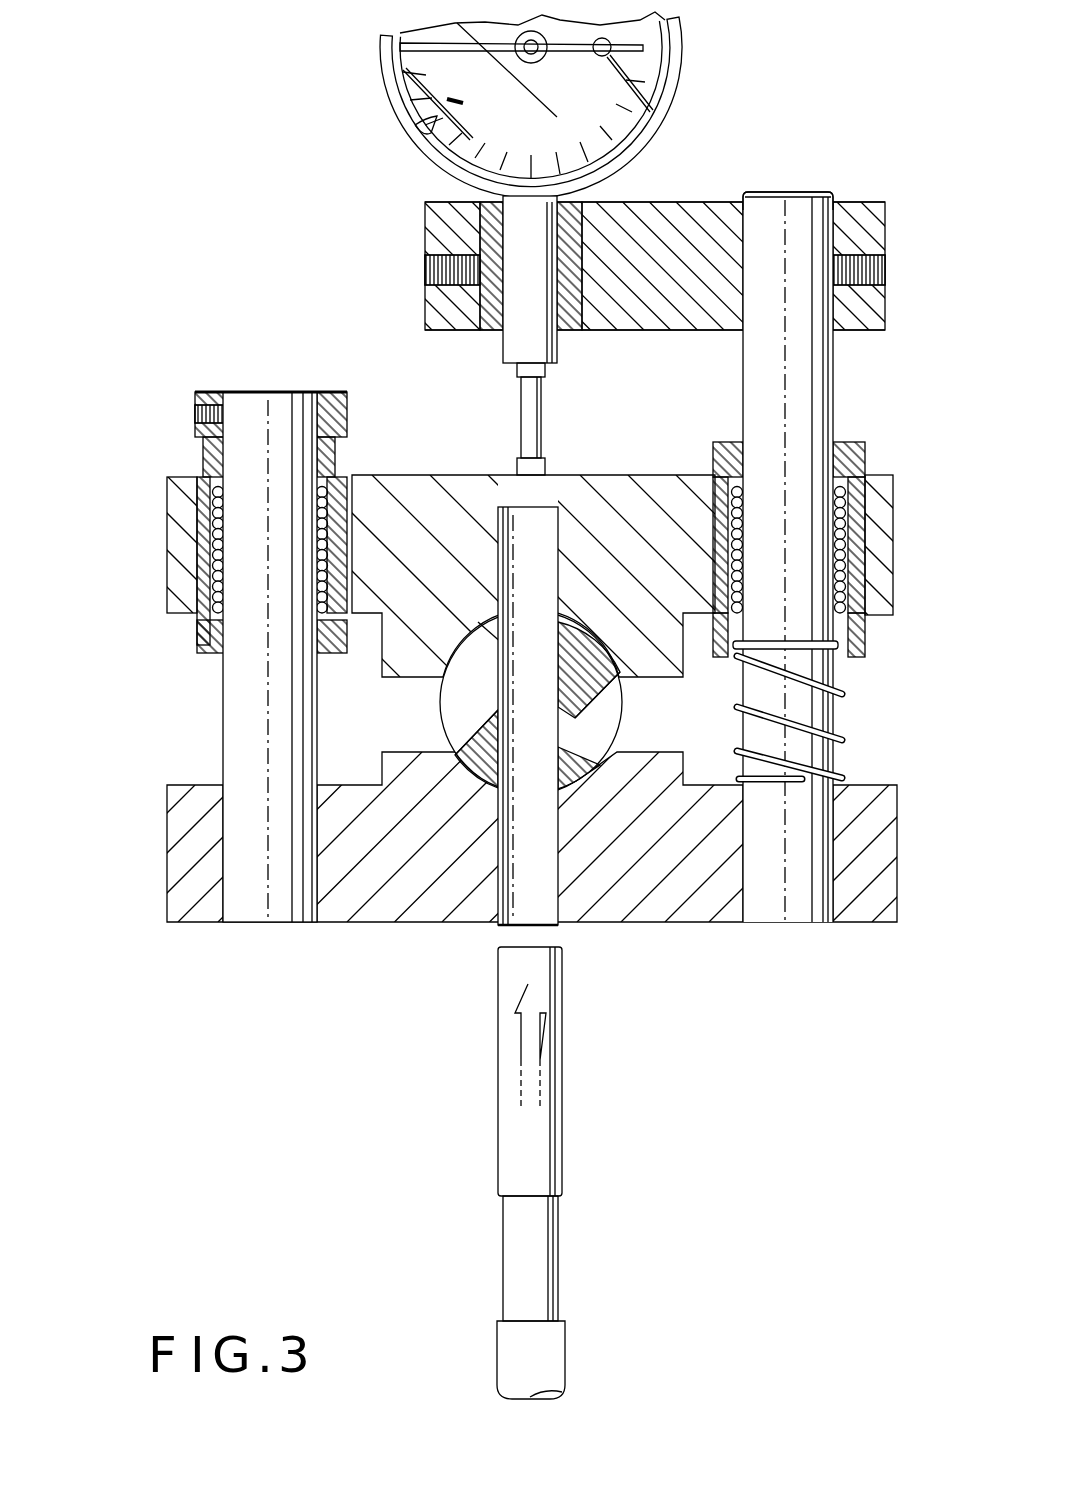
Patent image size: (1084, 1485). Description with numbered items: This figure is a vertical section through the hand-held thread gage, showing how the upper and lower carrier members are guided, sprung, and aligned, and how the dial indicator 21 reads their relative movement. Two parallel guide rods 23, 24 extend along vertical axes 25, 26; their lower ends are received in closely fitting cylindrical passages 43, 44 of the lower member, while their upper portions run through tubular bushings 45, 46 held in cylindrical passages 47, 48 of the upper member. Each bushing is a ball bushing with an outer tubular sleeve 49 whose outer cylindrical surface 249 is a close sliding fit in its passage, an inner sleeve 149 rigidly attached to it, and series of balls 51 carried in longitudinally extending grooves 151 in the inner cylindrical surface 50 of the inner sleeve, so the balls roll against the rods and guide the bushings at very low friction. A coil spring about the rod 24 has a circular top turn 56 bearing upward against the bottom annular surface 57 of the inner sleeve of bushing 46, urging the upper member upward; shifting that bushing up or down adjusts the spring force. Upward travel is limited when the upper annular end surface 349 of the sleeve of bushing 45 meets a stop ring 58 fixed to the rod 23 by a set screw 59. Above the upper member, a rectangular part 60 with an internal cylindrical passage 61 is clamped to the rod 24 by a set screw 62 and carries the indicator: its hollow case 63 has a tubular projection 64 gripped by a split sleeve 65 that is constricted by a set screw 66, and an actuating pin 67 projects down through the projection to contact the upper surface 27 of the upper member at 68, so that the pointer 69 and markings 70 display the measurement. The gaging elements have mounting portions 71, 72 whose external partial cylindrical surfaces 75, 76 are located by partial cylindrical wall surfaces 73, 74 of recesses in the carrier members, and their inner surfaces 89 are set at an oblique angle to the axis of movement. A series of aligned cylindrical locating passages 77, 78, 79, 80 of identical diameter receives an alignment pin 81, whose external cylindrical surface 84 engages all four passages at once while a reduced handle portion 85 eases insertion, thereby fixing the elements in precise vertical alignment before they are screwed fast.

The dial indicator 21 is at (374, 93).
The guide rod 23 is at (225, 680).
The guide rod 24 is at (743, 362).
The axis of guide rod 25 is at (266, 740).
The axis of guide rod 26 is at (786, 420).
The upper surface of member 11 27 is at (642, 475).
The cylindrical vertical passage 43 is at (232, 888).
The cylindrical vertical passage 44 is at (822, 890).
The tubular bushing 45 is at (200, 630).
The tubular bushing 46 is at (868, 645).
The cylindrical vertical passage 47 is at (178, 518).
The cylindrical vertical passage 48 is at (862, 570).
The outer tubular sleeve 49 is at (200, 490).
The inner cylindrical surface 50 is at (228, 460).
The balls 51 is at (318, 502).
The circular top turn of spring 56 is at (812, 652).
The bottom annular surface of inner sleeve 57 is at (738, 660).
The stop ring 58 is at (347, 396).
The set screw 59 is at (203, 410).
The part 60 is at (665, 212).
The internal cylindrical passage 61 is at (765, 200).
The set screw 62 is at (885, 268).
The hollow case 63 is at (681, 88).
The tubular projection 64 is at (505, 342).
The sleeve 65 is at (572, 318).
The set screw 66 is at (425, 268).
The actuating pin 67 is at (541, 442).
The contact point 68 is at (518, 466).
The pointer 69 is at (458, 64).
The markings 70 is at (434, 126).
The mounting portion 71 is at (605, 680).
The mounting portion 72 is at (468, 740).
The partial cylindrical wall surface 73 is at (582, 622).
The partial cylindrical wall surface 74 is at (470, 762).
The external partial cylindrical surface 75 is at (480, 615).
The external partial cylindrical surface 76 is at (562, 795).
The locating passage 77 is at (548, 925).
The locating passage 78 is at (560, 762).
The locating passage 79 is at (503, 652).
The locating passage 80 is at (506, 540).
The alignment pin 81 is at (497, 1108).
The external cylindrical surface 84 is at (562, 1102).
The handle portion 85 is at (553, 1212).
The inner surfaces of gaging elements 89 is at (548, 722).
The inner sleeve 149 is at (210, 465).
The longitudinally extending grooves 151 is at (322, 582).
The outer cylindrical surface 249 is at (868, 500).
The upper annular end surface 349 is at (347, 432).